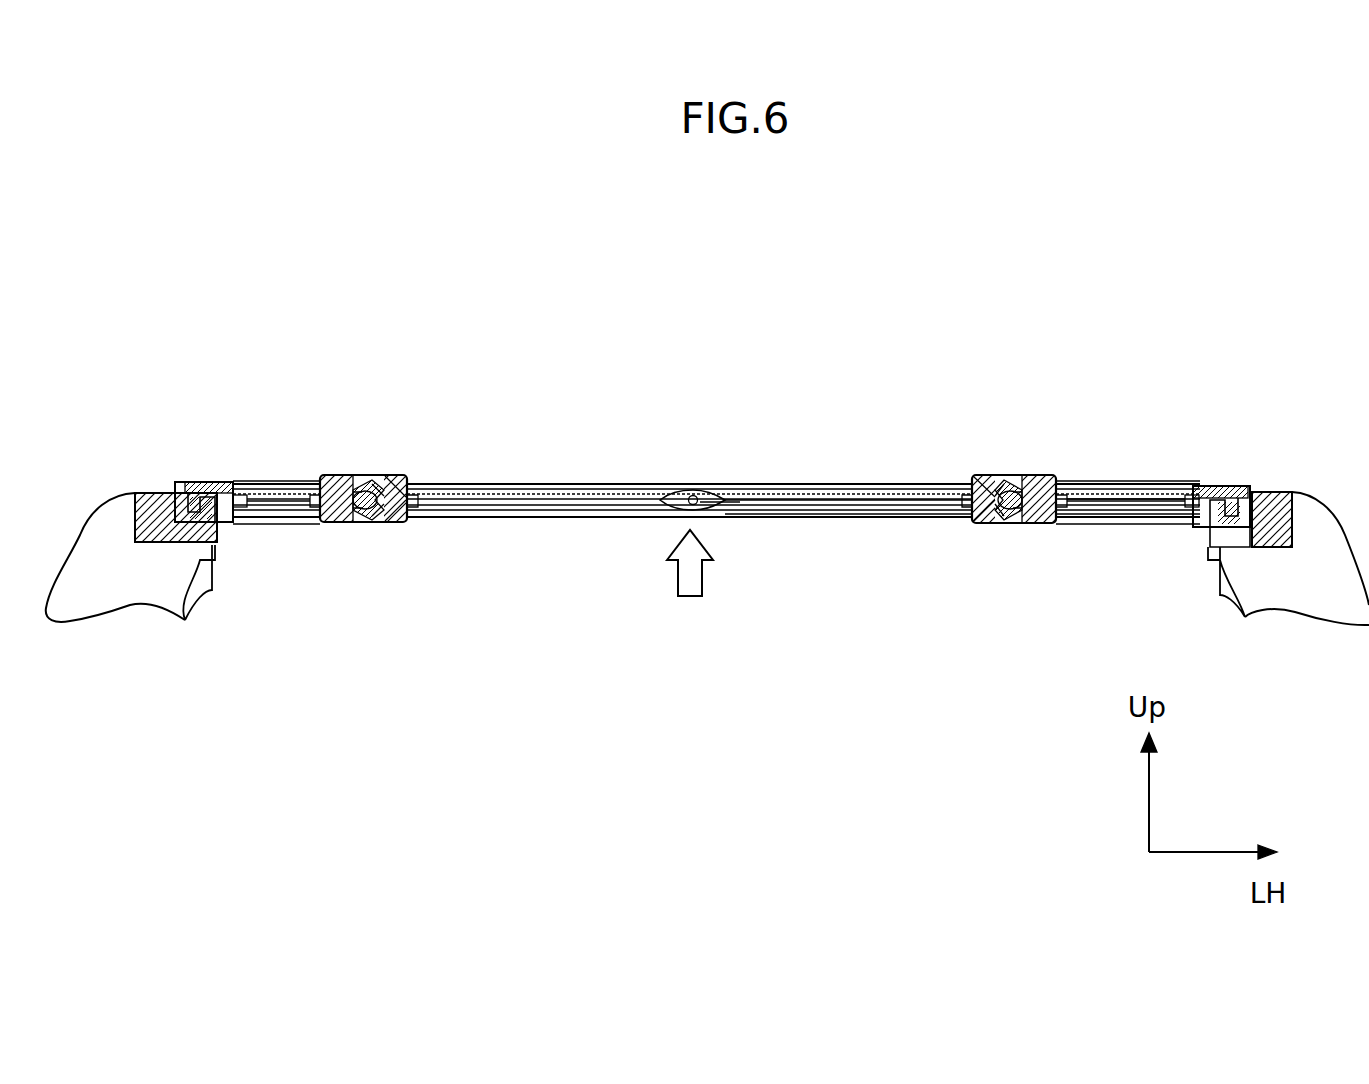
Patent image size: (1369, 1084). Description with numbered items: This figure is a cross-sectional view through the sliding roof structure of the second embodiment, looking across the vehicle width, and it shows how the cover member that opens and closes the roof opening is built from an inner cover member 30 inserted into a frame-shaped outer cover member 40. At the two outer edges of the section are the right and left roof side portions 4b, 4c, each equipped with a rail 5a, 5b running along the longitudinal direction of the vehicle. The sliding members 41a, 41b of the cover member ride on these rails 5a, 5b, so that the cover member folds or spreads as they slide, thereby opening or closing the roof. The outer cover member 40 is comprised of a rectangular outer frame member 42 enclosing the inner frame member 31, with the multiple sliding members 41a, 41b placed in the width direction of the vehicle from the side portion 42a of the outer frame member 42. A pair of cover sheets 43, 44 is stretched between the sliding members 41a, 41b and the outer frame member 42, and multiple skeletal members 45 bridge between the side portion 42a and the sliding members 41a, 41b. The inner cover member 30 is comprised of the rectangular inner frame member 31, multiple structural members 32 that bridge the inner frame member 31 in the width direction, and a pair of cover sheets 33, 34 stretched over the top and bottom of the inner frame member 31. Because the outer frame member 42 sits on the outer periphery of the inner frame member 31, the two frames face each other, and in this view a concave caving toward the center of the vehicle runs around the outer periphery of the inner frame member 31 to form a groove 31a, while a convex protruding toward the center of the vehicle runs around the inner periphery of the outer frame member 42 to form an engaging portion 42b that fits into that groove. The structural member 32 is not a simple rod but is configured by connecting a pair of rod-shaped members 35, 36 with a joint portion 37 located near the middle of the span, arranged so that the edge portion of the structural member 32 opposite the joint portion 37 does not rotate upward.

The inner cover member 30 is at (573, 470).
The inner frame member 31 is at (400, 478).
The groove 31a is at (372, 480).
The structural member 32 is at (888, 478).
The cover sheet 33 is at (813, 499).
The cover sheet 34 is at (848, 520).
The rod-shaped member 35 is at (753, 498).
The rod-shaped member 36 is at (473, 486).
The joint portion 37 is at (693, 493).
The outer cover member 40 is at (258, 468).
The sliding member 41a is at (1245, 490).
The sliding member 41b is at (183, 490).
The outer frame member 42 is at (345, 523).
The side portion 42a is at (314, 524).
The engaging portion 42b is at (378, 523).
The cover sheet 43 is at (303, 482).
The cover sheet 44 is at (246, 518).
The skeletal member 45 is at (292, 518).
The roof side portion 4b is at (1315, 492).
The roof side portion 4c is at (113, 490).
The rail 5a is at (1272, 547).
The rail 5b is at (160, 542).